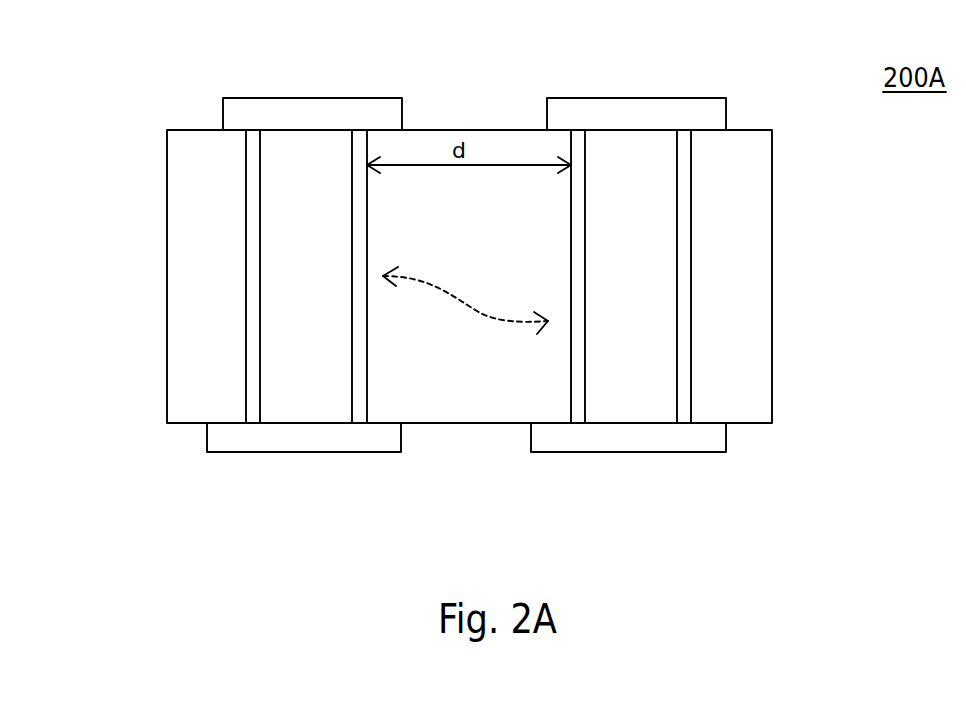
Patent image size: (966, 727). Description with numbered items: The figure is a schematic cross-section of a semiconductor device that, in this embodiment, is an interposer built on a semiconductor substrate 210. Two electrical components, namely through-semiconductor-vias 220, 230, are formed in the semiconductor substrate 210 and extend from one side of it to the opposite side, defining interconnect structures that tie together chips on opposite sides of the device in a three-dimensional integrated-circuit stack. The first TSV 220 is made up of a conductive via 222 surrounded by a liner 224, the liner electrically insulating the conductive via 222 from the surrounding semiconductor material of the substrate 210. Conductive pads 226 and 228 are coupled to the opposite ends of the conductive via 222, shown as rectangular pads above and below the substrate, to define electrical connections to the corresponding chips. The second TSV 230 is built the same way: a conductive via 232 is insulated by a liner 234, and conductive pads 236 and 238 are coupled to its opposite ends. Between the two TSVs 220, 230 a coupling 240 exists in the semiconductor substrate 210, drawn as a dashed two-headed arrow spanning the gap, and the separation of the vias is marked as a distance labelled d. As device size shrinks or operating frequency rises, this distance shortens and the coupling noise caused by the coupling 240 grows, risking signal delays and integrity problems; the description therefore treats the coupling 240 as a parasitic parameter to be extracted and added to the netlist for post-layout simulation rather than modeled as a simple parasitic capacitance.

The semiconductor substrate 210 is at (773, 401).
The through-semiconductor-via 220 is at (223, 255).
The conductive via 222 is at (278, 285).
The liner 224 is at (252, 358).
The conductive pad 226 is at (273, 110).
The conductive pad 228 is at (228, 437).
The through-semiconductor-via 230 is at (719, 259).
The conductive via 232 is at (640, 278).
The liner 234 is at (682, 339).
The conductive pad 236 is at (669, 109).
The conductive pad 238 is at (708, 439).
The coupling 240 is at (477, 311).